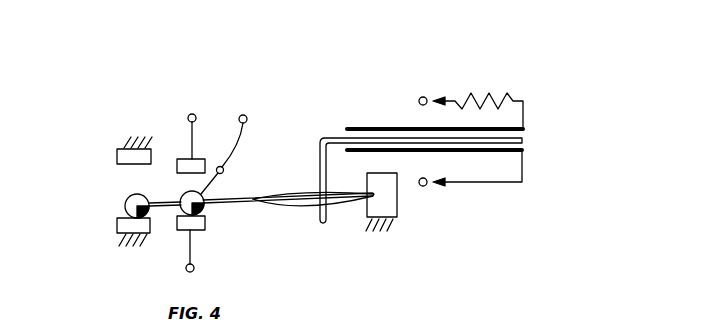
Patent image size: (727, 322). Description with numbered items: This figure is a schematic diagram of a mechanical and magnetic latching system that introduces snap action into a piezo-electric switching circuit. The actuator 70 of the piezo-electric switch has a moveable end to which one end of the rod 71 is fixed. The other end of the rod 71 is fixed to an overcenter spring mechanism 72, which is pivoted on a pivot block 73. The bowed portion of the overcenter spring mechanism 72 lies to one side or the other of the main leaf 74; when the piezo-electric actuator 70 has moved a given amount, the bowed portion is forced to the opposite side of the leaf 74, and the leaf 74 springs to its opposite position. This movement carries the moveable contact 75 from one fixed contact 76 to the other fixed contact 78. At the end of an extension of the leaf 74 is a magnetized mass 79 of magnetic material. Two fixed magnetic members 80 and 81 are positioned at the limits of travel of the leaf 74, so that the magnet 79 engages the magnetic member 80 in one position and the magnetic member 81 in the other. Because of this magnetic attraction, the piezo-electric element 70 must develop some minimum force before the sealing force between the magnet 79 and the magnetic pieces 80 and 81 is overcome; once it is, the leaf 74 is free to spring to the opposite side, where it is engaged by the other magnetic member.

The actuator of a piezo-electric switch 70 is at (364, 118).
The rod 71 is at (319, 148).
The overcenter spring mechanism 72 is at (299, 222).
The pivot block 73 is at (397, 207).
The main leaf 74 is at (242, 207).
The moveable contact 75 is at (183, 193).
The fixed contact 76 is at (203, 233).
The fixed contact 78 is at (203, 158).
The mass of magnetic material 79 is at (125, 205).
The fixed magnetic member 80 is at (115, 230).
The fixed magnetic member 81 is at (117, 155).